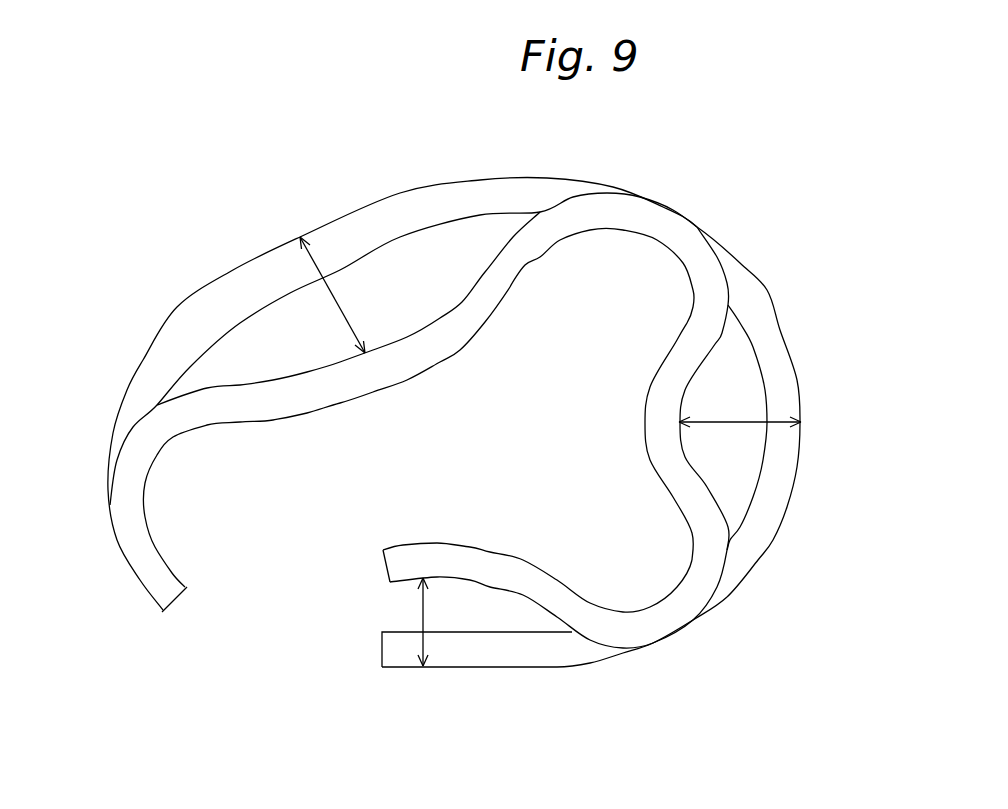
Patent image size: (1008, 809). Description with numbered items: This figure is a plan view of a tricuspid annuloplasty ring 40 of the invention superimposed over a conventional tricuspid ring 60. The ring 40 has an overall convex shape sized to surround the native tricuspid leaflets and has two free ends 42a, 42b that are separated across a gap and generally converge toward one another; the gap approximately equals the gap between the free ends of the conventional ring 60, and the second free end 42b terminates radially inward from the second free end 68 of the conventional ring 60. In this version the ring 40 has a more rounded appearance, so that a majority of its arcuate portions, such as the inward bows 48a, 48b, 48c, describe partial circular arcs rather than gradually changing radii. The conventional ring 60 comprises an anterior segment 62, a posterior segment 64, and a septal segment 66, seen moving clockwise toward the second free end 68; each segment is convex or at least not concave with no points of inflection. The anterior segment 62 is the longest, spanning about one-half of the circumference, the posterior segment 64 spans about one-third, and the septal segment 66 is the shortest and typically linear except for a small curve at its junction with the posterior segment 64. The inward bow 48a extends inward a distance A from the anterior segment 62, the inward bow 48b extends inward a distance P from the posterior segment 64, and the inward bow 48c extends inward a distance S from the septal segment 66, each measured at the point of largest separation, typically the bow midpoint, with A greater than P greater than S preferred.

The tricuspid annuloplasty ring 40 is at (118, 390).
The first free end 42a is at (176, 599).
The second free end 42b is at (383, 562).
The inward bow 48a is at (423, 380).
The inward bow 48b is at (645, 419).
The inward bow 48c is at (497, 547).
The conventional tricuspid ring 60 is at (770, 292).
The anterior segment 62 is at (258, 263).
The posterior segment 64 is at (802, 457).
The septal segment 66 is at (458, 668).
The second free end 68 is at (381, 652).
The distance A is at (333, 303).
The distance P is at (732, 422).
The distance S is at (423, 613).